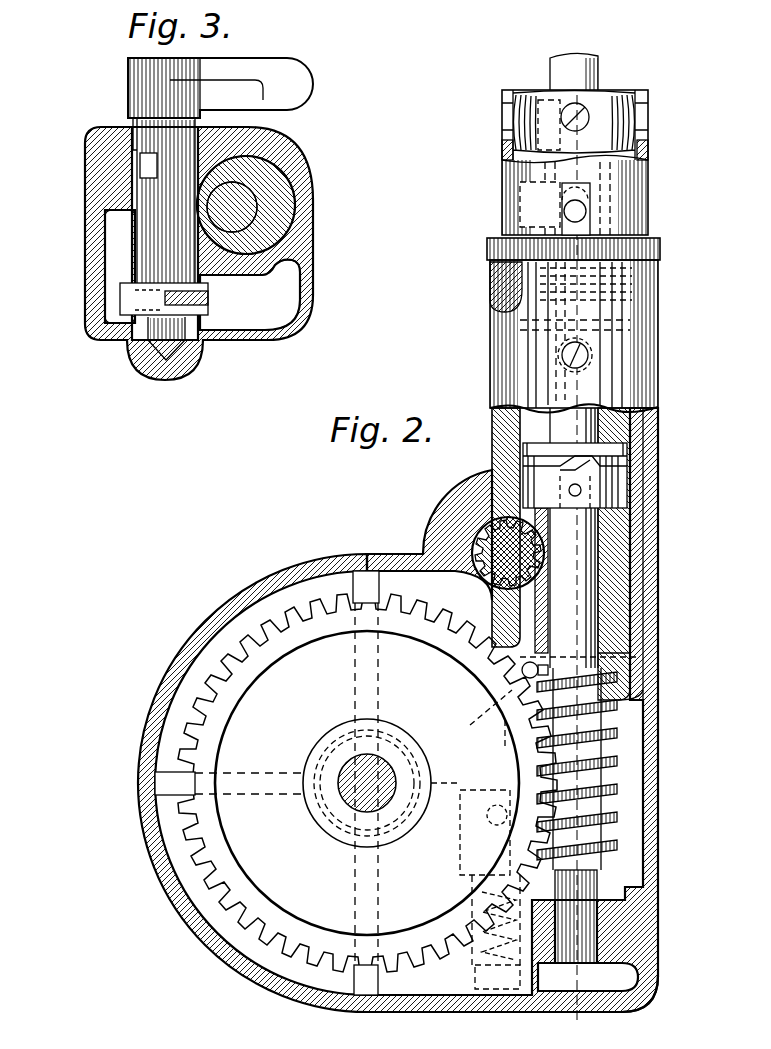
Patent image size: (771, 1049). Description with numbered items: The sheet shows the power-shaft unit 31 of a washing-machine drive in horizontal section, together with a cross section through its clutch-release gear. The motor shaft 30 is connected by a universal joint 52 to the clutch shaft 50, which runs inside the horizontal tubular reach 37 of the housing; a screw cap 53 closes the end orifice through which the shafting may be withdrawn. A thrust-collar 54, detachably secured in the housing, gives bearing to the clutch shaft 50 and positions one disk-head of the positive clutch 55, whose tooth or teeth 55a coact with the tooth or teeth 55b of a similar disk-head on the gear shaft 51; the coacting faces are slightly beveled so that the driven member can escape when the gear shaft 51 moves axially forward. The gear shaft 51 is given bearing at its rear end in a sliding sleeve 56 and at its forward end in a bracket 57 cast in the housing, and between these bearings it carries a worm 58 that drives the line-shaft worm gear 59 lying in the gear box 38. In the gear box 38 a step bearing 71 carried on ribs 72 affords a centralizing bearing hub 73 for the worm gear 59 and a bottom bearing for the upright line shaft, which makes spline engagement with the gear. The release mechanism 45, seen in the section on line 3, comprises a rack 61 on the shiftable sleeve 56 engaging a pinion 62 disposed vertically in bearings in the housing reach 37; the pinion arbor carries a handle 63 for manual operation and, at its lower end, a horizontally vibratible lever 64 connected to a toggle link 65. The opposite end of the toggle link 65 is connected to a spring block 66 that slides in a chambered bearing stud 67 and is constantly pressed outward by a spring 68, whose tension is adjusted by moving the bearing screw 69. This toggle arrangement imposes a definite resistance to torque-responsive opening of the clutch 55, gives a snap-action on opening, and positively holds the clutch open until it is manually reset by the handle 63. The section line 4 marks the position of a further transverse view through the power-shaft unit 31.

In FIG. 2, the motor shaft 30 is at (598, 72).
In FIG. 2, the power shaft unit 31 is at (640, 416).
In FIG. 2, the horizontal tubular reach 37 is at (487, 314).
In FIG. 2, the gear box 38 is at (137, 710).
In FIG. 3, the release mechanism 45 is at (113, 221).
In FIG. 2, the release mechanism 45 is at (522, 467).
In FIG. 2, the clutch shaft 50 is at (600, 402).
In FIG. 3, the gear shaft 51 is at (250, 205).
In FIG. 2, the gear shaft 51 is at (590, 597).
In FIG. 2, the universal joint 52 is at (498, 164).
In FIG. 2, the screw cap 53 is at (660, 255).
In FIG. 2, the thrust-collar 54 is at (650, 430).
In FIG. 2, the positive clutch 55 is at (628, 447).
In FIG. 2, the clutch tooth 55a is at (618, 468).
In FIG. 2, the clutch tooth 55b is at (622, 490).
In FIG. 3, the sliding sleeve 56 is at (264, 172).
In FIG. 2, the sliding sleeve 56 is at (612, 636).
In FIG. 2, the bracket 57 is at (615, 937).
In FIG. 2, the worm 58 is at (615, 735).
In FIG. 2, the worm gear 59 is at (236, 632).
In FIG. 2, the rack 61 is at (626, 652).
In FIG. 3, the pinion 62 is at (125, 240).
In FIG. 2, the pinion 62 is at (478, 546).
In FIG. 3, the handle 63 is at (300, 76).
In FIG. 3, the lever 64 is at (120, 302).
In FIG. 2, the lever 64 is at (497, 628).
In FIG. 3, the toggle link 65 is at (200, 298).
In FIG. 2, the toggle link 65 is at (492, 742).
In FIG. 2, the spring block 66 is at (496, 796).
In FIG. 2, the chambered bearing stud 67 is at (462, 882).
In FIG. 2, the spring 68 is at (470, 952).
In FIG. 2, the bearing screw 69 is at (512, 1010).
In FIG. 2, the step bearing 71 is at (316, 752).
In FIG. 2, the ribs 72 is at (342, 868).
In FIG. 2, the bearing hub 73 is at (392, 822).
In FIG. 2, the section line 3— 3 is at (402, 558).
In FIG. 2, the section line 4— 4 is at (596, 42).